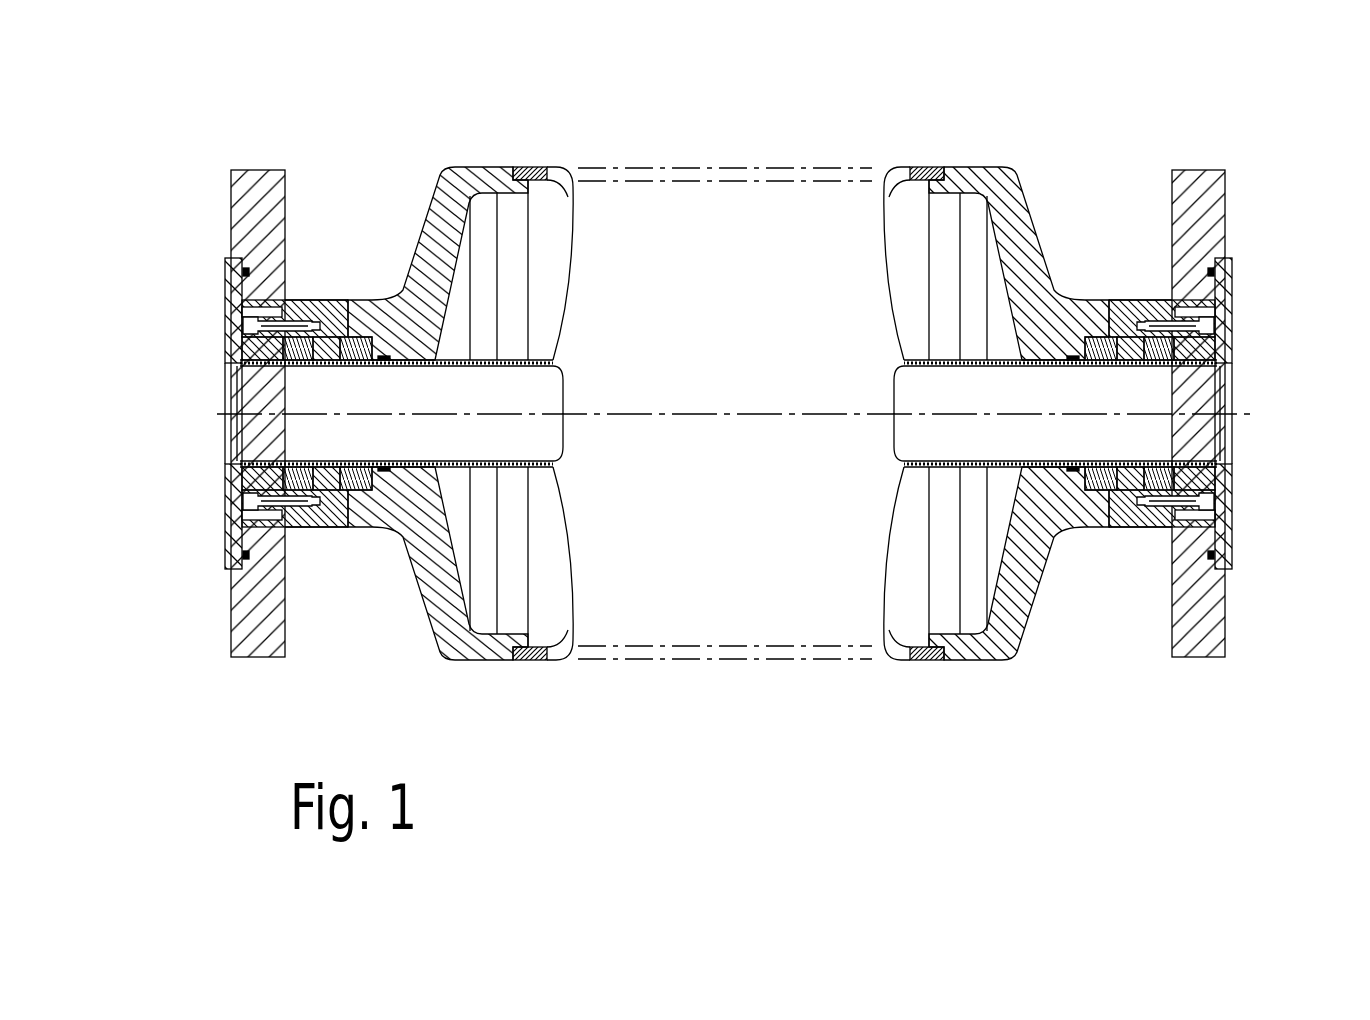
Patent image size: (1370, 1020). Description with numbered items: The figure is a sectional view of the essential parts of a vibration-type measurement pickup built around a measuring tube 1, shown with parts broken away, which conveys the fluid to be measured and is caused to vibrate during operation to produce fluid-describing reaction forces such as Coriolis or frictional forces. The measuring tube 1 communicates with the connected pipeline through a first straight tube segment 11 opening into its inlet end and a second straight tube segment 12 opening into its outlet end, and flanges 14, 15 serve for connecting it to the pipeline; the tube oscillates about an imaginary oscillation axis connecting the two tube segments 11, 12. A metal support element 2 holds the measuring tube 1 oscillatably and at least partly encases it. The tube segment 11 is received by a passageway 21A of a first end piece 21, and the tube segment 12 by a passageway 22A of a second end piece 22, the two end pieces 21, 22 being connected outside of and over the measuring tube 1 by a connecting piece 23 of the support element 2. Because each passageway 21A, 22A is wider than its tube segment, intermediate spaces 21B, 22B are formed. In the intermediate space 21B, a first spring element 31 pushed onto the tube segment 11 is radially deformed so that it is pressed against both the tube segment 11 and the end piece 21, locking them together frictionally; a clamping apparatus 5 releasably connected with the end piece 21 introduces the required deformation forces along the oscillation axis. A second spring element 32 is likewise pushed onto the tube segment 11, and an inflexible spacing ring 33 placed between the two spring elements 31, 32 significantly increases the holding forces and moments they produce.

The measuring tube 1 is at (852, 372).
The support element 2 is at (589, 156).
The clamping apparatus 5 is at (226, 506).
The first straight tube segment 11 is at (247, 446).
The second straight tube segment 12 is at (1200, 401).
The flange 14 is at (256, 170).
The flange 15 is at (1340, 92).
The first end piece 21 is at (380, 300).
The passageway 21A is at (446, 344).
The intermediate space 21B is at (340, 330).
The second end piece 22 is at (1038, 276).
The passageway 22A is at (1011, 343).
The intermediate space 22B is at (1124, 330).
The connecting piece 23 is at (921, 659).
The first spring element 31 is at (347, 492).
The second spring element 32 is at (243, 348).
The spacing ring 33 is at (320, 515).